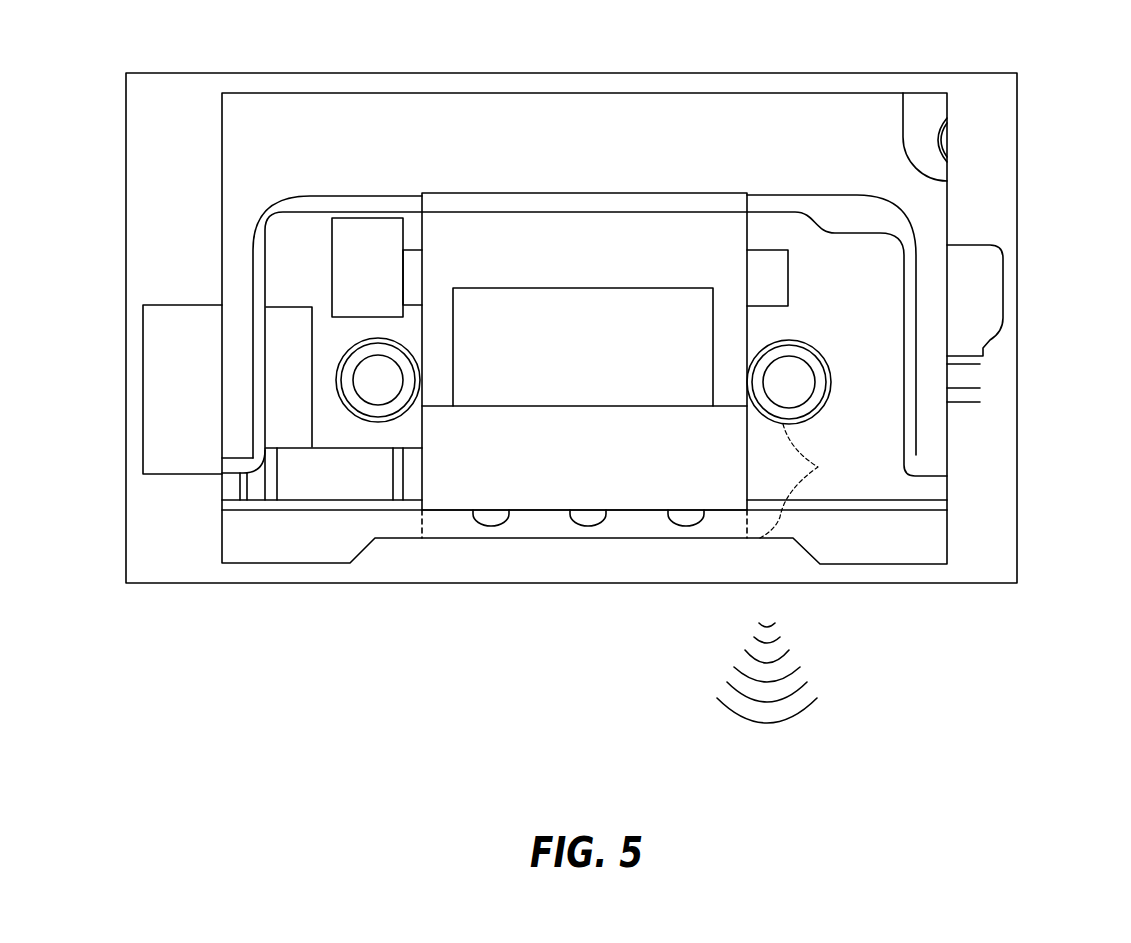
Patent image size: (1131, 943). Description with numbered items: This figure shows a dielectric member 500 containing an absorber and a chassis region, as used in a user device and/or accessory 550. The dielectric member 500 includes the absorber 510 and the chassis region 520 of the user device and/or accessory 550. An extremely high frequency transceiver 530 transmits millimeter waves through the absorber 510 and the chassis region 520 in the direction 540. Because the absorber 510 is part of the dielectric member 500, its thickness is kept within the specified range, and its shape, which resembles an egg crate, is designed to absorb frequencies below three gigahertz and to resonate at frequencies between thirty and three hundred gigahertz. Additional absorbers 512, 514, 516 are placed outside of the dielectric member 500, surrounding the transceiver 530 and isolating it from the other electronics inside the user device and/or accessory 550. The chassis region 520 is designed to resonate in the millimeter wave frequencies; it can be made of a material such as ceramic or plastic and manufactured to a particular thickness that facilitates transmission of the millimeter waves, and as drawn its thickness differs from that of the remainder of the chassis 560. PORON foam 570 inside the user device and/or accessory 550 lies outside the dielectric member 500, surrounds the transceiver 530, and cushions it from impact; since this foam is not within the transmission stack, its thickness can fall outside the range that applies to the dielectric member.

The dielectric member 500 is at (818, 467).
The absorber 510 is at (552, 457).
The absorber 512 is at (361, 243).
The absorber 514 is at (412, 265).
The absorber 516 is at (768, 275).
The chassis region 520 is at (459, 522).
The extremely high frequency transceiver 530 is at (569, 395).
The direction 540 is at (843, 720).
The user device and/or accessory 550 is at (222, 197).
The chassis 560 is at (273, 540).
The PORON foam 570 is at (569, 280).